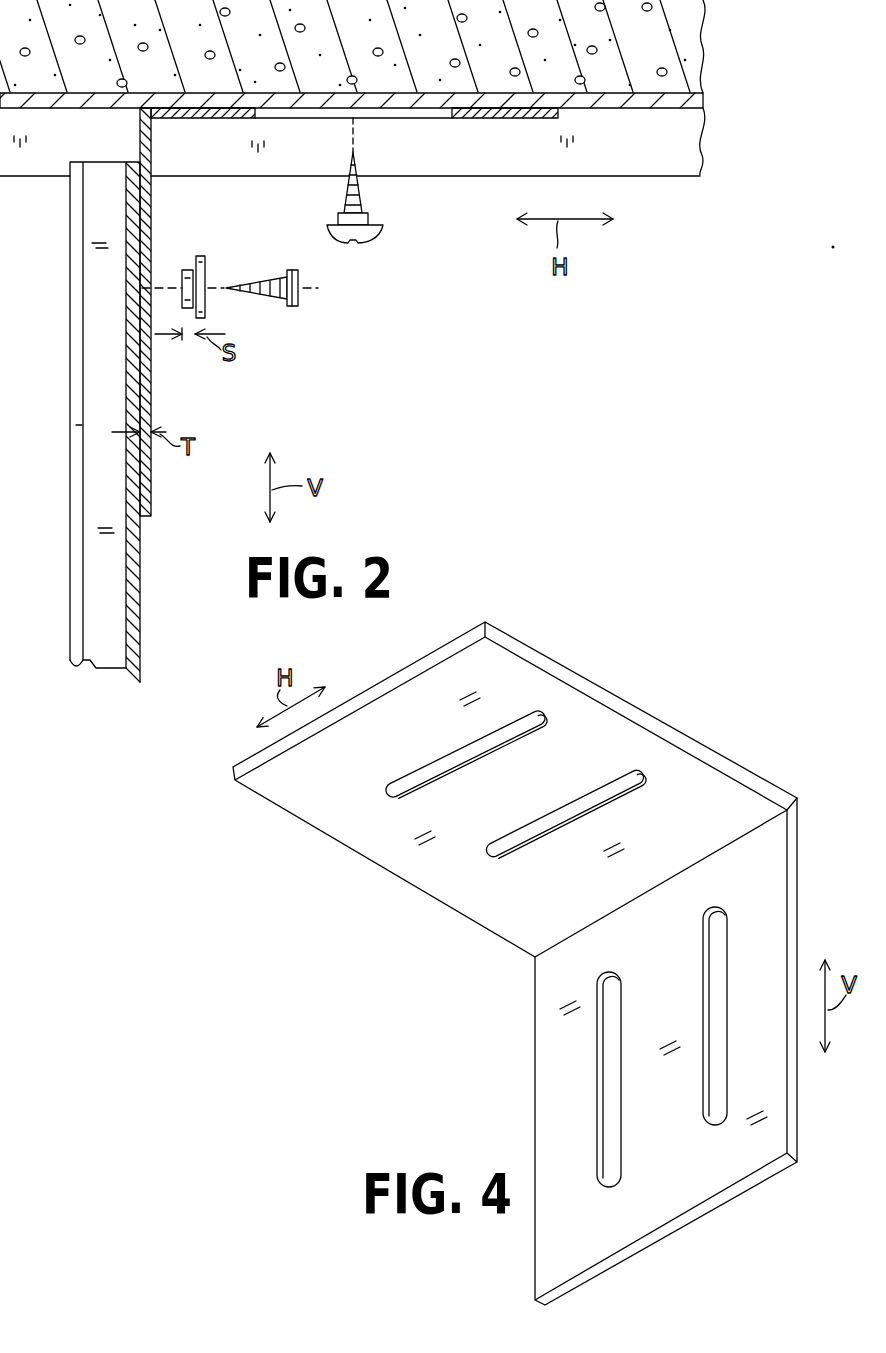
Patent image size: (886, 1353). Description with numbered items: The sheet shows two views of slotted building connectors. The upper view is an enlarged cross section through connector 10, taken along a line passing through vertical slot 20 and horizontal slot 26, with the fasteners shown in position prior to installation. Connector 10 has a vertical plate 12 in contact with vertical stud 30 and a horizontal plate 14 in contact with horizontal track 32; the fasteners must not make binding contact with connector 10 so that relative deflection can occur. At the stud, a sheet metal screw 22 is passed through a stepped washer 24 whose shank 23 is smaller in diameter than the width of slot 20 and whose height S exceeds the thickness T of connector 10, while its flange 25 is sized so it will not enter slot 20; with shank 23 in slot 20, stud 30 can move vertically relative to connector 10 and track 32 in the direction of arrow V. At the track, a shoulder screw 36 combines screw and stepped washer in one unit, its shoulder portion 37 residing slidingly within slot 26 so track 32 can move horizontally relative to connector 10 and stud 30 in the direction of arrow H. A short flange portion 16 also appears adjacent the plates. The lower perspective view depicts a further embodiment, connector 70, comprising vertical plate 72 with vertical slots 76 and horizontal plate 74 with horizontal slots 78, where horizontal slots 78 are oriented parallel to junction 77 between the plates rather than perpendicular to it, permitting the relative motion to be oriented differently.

In FIG. 2, the connector 10 is at (282, 390).
In FIG. 2, the vertical plate 12 is at (150, 478).
In FIG. 2, the horizontal plate 14 is at (525, 119).
In FIG. 2, the L-shaped clip angle 16 is at (153, 120).
In FIG. 2, the vertical slot 20 is at (150, 392).
In FIG. 2, the screw 22 is at (299, 304).
In FIG. 2, the shank 23 is at (186, 268).
In FIG. 2, the stepped washer 24 is at (207, 270).
In FIG. 2, the flange 25 is at (200, 255).
In FIG. 2, the horizontal slot 26 is at (430, 119).
In FIG. 2, the vertical stud 30 is at (141, 597).
In FIG. 2, the horizontal track 32 is at (617, 151).
In FIG. 2, the shoulder screw 36 is at (380, 237).
In FIG. 2, the shoulder portion 37 is at (370, 216).
In FIG. 4, the connector 70 is at (467, 952).
In FIG. 4, the vertical plate 72 is at (685, 1179).
In FIG. 4, the horizontal plate 74 is at (695, 807).
In FIG. 4, the vertical slots 76 is at (612, 1100).
In FIG. 4, the junction 77 is at (650, 890).
In FIG. 4, the horizontal slots 78 is at (546, 823).